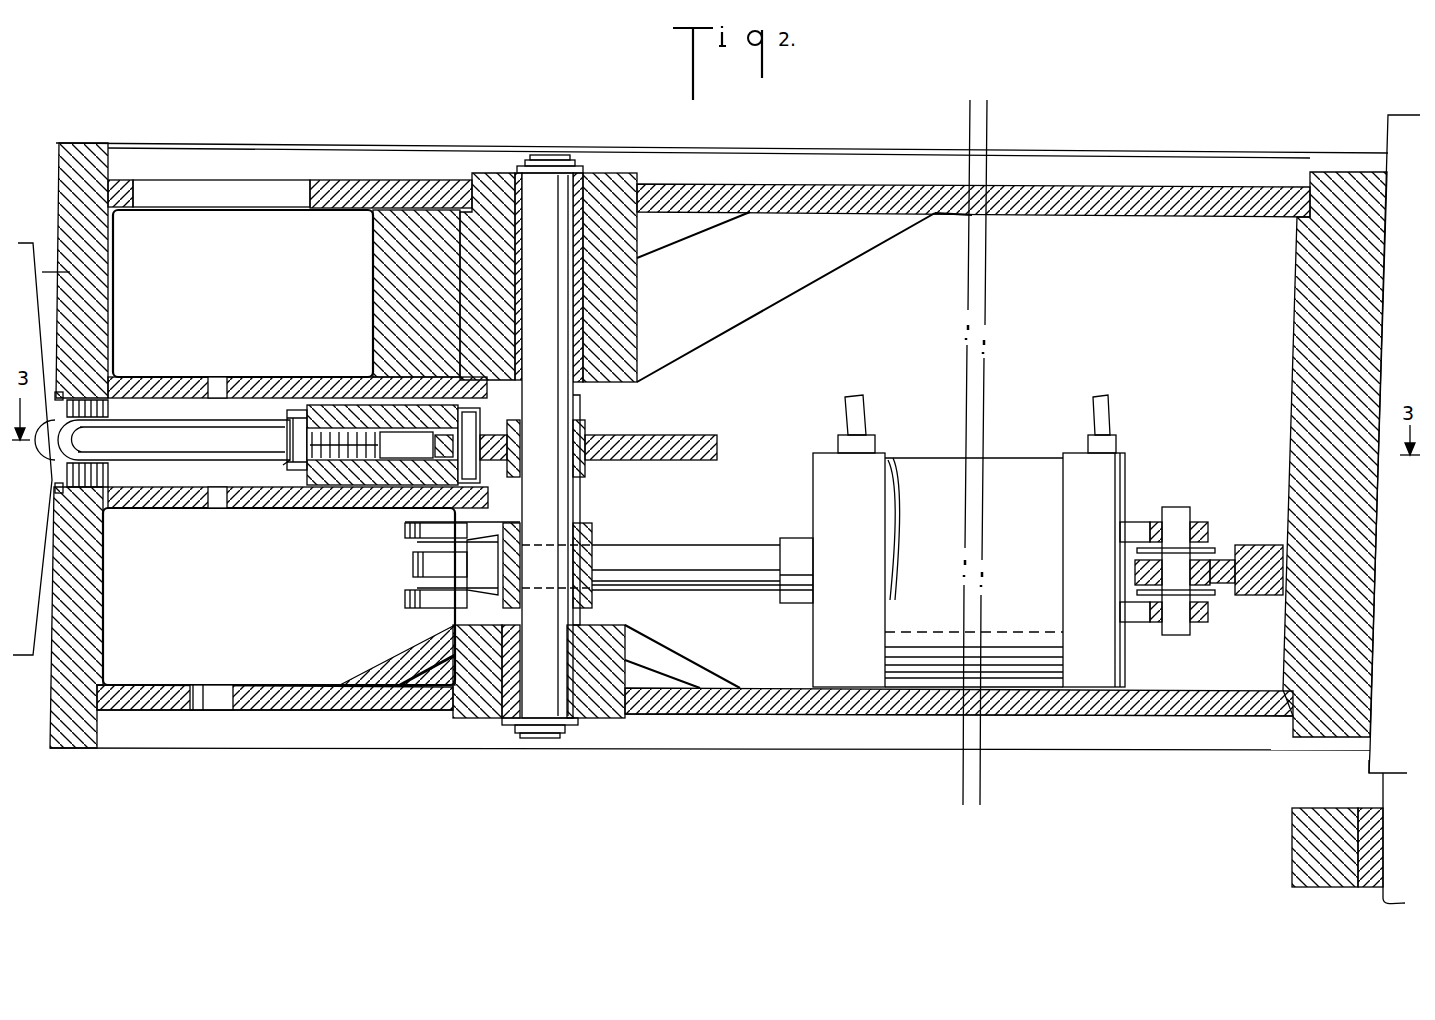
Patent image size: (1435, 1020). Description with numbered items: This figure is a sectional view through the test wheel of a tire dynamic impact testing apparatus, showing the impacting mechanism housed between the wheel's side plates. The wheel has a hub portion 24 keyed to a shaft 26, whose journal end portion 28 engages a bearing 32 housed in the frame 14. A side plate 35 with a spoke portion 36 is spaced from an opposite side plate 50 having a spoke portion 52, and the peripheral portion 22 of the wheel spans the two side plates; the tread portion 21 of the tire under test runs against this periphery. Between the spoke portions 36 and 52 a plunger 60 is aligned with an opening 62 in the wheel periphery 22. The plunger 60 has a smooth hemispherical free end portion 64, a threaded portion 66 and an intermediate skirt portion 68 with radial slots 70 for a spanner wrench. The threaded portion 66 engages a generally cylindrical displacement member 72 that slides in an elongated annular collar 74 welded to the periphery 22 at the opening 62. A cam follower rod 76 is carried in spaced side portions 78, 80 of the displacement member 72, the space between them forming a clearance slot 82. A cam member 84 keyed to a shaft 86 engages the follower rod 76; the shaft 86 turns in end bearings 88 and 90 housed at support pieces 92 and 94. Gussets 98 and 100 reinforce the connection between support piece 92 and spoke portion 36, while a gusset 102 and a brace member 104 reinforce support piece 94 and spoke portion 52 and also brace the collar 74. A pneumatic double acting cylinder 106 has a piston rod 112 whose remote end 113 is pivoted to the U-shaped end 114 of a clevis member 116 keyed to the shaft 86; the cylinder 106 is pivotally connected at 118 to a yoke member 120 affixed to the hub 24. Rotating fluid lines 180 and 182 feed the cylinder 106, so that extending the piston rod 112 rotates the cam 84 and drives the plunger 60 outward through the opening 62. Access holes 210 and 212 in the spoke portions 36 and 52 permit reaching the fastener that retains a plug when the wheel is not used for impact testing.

The frame 14 is at (1300, 825).
The tread portion 21 is at (82, 270).
The peripheral portion 22 is at (130, 143).
The hub portion 24 is at (1290, 650).
The shaft 26 is at (1405, 604).
The journal end portion 28 is at (1387, 785).
The bearing 32 is at (1373, 808).
The side plate 35 is at (712, 718).
The spoke portion 36 is at (790, 718).
The opposite side plate 50 is at (731, 182).
The spoke portion 52 is at (808, 202).
The plunger 60 is at (152, 463).
The opening 62 is at (55, 490).
The hemispherical free end portion 64 is at (52, 465).
The threaded portion 66 is at (330, 432).
The skirt portion 68 is at (290, 413).
The radial slot 70 is at (283, 465).
The displacement member 72 is at (328, 482).
The annular collar 74 is at (150, 377).
The cam follower rod 76 is at (440, 463).
The side portion 78 is at (490, 422).
The side portion 80 is at (484, 484).
The clearance slot 82 is at (405, 435).
The cam member 84 is at (700, 433).
The shaft 86 is at (580, 500).
The end bearing 88 is at (500, 718).
The end bearing 90 is at (515, 207).
The support piece 92 is at (603, 720).
The support piece 94 is at (606, 173).
The gusset 98 is at (386, 660).
The gusset 100 is at (678, 663).
The gusset 102 is at (812, 272).
The brace member 104 is at (382, 246).
The pneumatic double acting cylinder 106 is at (1023, 468).
The piston rod 112 is at (704, 556).
The remote end 113 is at (412, 570).
The U-shaped end 114 is at (405, 607).
The clevis member 116 is at (593, 527).
The pivotal connection 118 is at (1185, 506).
The yoke member 120 is at (1262, 547).
The rotating fluid line 180 is at (845, 412).
The rotating fluid line 182 is at (1110, 410).
The access hole 210 is at (207, 710).
The access hole 212 is at (222, 181).